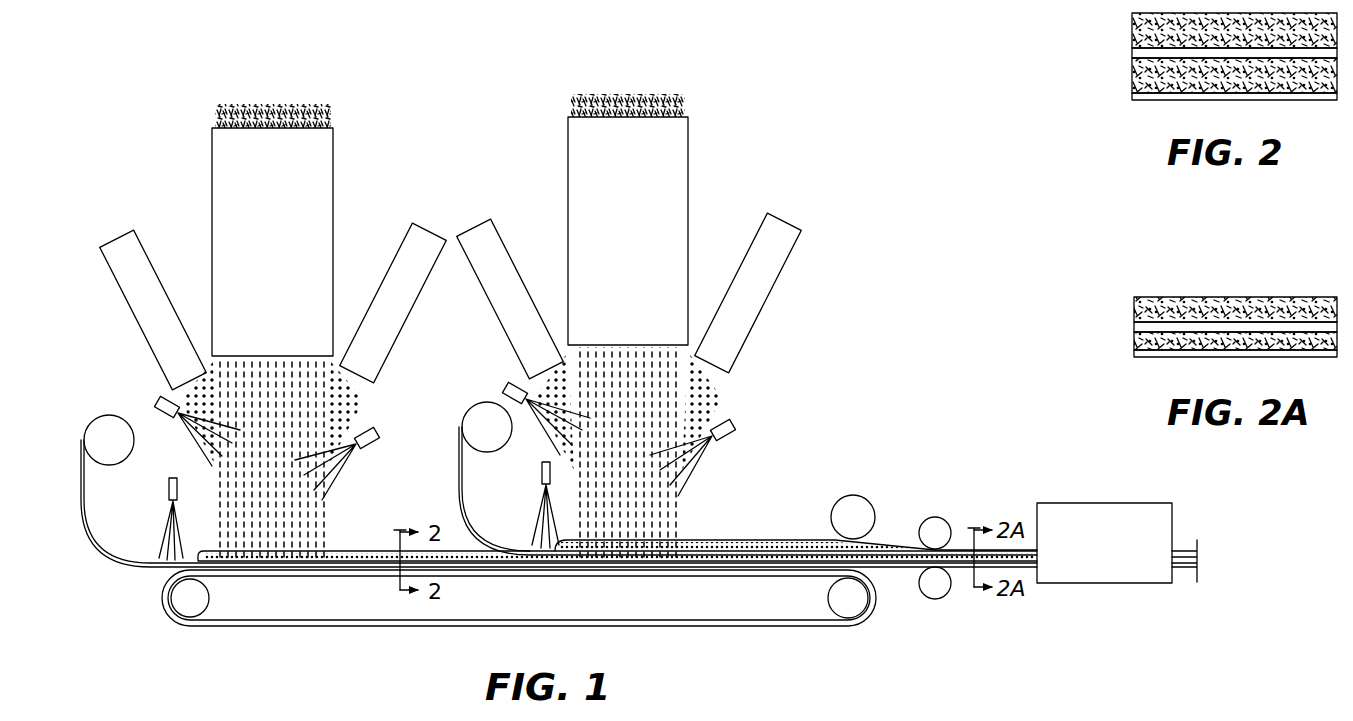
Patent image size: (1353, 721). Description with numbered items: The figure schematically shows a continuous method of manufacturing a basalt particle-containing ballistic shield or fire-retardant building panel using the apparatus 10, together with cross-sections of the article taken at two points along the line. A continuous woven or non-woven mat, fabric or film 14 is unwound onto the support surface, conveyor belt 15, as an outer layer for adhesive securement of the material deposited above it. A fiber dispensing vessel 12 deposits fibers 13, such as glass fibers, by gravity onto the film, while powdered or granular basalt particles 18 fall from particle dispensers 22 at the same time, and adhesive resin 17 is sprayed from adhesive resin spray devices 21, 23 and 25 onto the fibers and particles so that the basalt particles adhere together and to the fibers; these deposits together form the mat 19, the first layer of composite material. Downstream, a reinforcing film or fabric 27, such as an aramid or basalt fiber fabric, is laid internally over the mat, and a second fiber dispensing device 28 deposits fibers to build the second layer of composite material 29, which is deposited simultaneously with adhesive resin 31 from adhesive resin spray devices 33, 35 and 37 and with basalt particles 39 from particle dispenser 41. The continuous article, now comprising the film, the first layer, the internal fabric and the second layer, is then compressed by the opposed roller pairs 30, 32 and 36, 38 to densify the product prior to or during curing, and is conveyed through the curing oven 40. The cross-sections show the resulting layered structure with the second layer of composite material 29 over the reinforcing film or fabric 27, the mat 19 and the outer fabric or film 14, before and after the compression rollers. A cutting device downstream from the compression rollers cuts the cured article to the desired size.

In FIG. 1, the apparatus 10 is at (132, 122).
In FIG. 1, the fiber dispensing vessel 12 is at (211, 274).
In FIG. 1, the fibers 13 is at (318, 108).
In FIG. 1, the mat, fabric or film 14 is at (112, 556).
In FIG. 2, the mat, fabric or film 14 is at (1140, 99).
In FIG. 2A, the mat, fabric or film 14 is at (1142, 358).
In FIG. 1, the conveyor belt 15 is at (633, 627).
In FIG. 1, the adhesive resin 17 is at (186, 440).
In FIG. 1, the basalt particles 18 is at (185, 398).
In FIG. 1, the mat 19 is at (345, 548).
In FIG. 2, the mat 19 is at (1132, 78).
In FIG. 2A, the mat 19 is at (1134, 346).
In FIG. 1, the adhesive resin spray device 21 is at (155, 403).
In FIG. 1, the particle dispenser 22 is at (143, 254).
In FIG. 1, the adhesive resin spray device 23 is at (168, 492).
In FIG. 1, the adhesive resin spray device 25 is at (379, 444).
In FIG. 1, the reinforcing film or fabric 27 is at (470, 521).
In FIG. 2, the reinforcing film or fabric 27 is at (1132, 52).
In FIG. 2A, the reinforcing film or fabric 27 is at (1134, 326).
In FIG. 1, the second fiber dispensing device 28 is at (567, 174).
In FIG. 1, the second layer of composite material 29 is at (775, 541).
In FIG. 2, the second layer of composite material 29 is at (1132, 32).
In FIG. 2A, the second layer of composite material 29 is at (1134, 304).
In FIG. 1, the roller 30 is at (858, 495).
In FIG. 1, the adhesive resin 31 is at (556, 432).
In FIG. 1, the roller 32 is at (845, 619).
In FIG. 1, the adhesive resin spray device 33 is at (503, 388).
In FIG. 1, the adhesive resin spray device 35 is at (540, 473).
In FIG. 1, the compression roller 36 is at (940, 517).
In FIG. 1, the adhesive resin spray device 37 is at (738, 436).
In FIG. 1, the compression roller 38 is at (930, 600).
In FIG. 1, the basalt particles 39 is at (502, 260).
In FIG. 1, the curing oven 40 is at (1091, 546).
In FIG. 1, the particle dispenser 41 is at (738, 268).